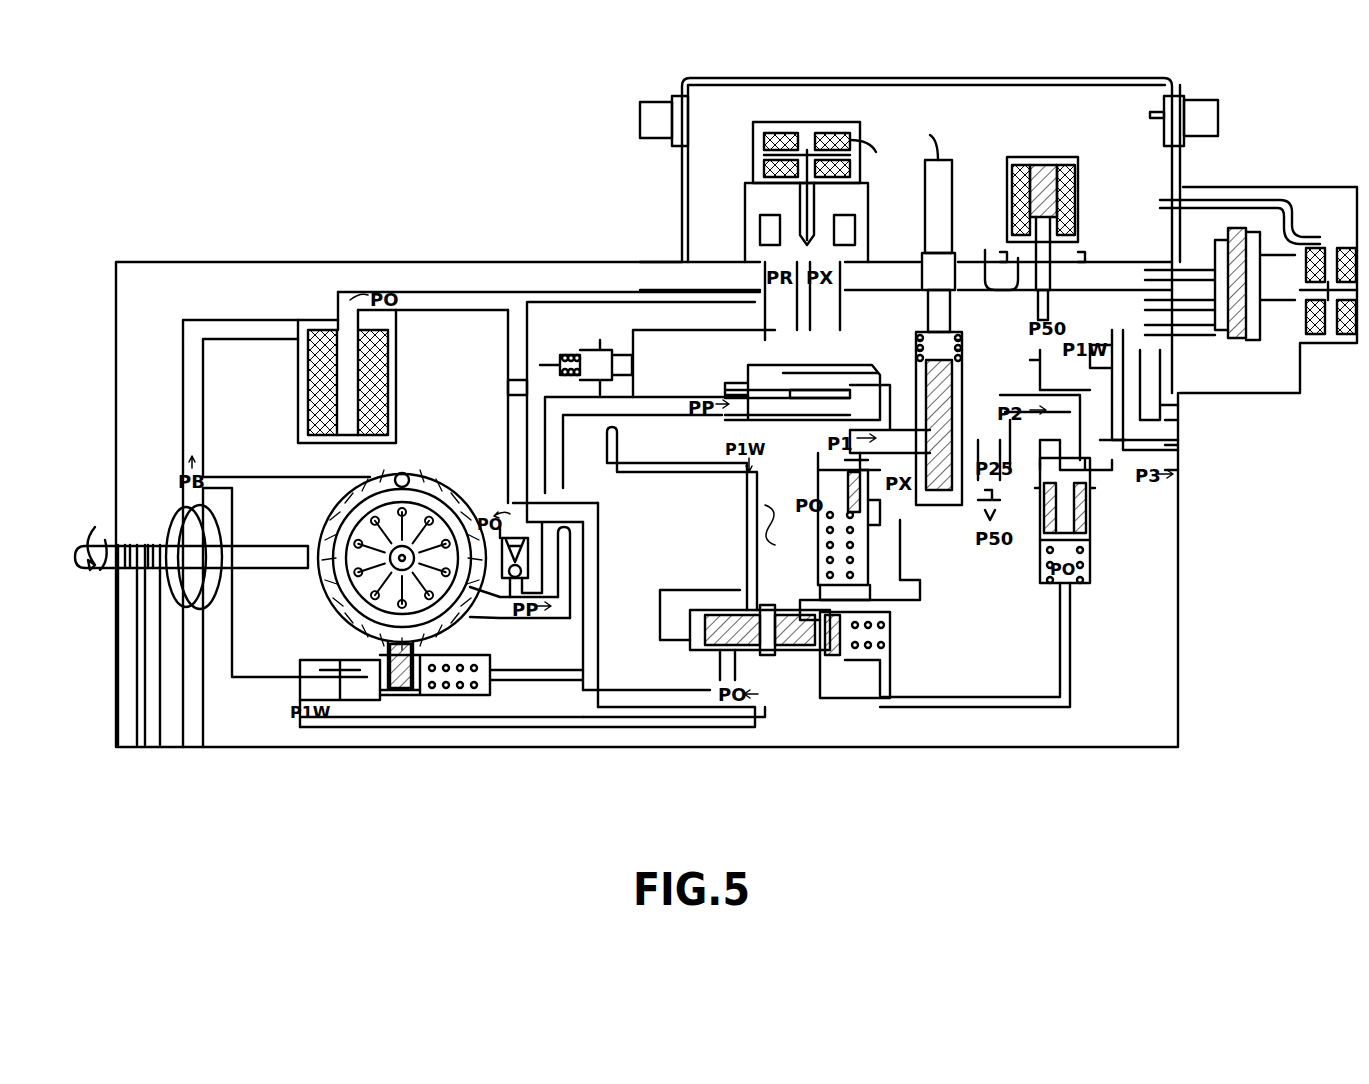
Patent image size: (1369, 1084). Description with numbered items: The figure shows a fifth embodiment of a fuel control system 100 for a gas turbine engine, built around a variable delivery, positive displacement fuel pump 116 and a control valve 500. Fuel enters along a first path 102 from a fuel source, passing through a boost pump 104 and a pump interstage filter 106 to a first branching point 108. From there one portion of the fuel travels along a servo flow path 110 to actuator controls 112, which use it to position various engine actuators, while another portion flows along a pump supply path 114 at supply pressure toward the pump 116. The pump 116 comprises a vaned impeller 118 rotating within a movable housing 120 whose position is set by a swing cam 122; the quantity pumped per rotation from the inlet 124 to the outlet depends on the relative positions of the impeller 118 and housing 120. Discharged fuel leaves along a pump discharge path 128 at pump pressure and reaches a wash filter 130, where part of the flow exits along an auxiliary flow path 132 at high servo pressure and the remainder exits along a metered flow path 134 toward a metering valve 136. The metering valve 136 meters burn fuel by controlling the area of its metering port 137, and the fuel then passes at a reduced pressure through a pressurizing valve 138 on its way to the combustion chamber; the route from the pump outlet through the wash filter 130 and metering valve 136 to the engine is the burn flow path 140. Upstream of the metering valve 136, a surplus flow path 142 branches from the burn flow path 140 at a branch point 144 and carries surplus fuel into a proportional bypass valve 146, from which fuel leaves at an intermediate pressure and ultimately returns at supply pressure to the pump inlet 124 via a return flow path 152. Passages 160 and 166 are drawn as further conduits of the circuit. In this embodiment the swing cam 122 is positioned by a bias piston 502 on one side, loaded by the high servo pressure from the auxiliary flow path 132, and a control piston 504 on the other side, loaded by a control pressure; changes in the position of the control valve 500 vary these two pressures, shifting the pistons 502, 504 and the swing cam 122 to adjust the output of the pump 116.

The fuel control system 100 is at (140, 205).
The first path 102 is at (190, 722).
The boost pump 104 is at (190, 590).
The pump interstage filter 106 is at (325, 330).
The first branching point 108 is at (520, 300).
The servo flow path 110 is at (612, 340).
The actuator controls 112 is at (1248, 180).
The pump supply path 114 is at (515, 345).
The variable delivery fuel pump 116 is at (366, 522).
The vaned impeller 118 is at (346, 540).
The movable housing 120 is at (322, 520).
The swing cam 122 is at (375, 648).
The inlet 124 is at (490, 505).
The pump discharge path 128 is at (562, 480).
The wash filter 130 is at (748, 372).
The auxiliary flow path 132 is at (820, 455).
The metered flow path 134 is at (815, 392).
The metering valve 136 is at (912, 342).
The metering port 137 is at (965, 380).
The pressurizing valve 138 is at (1090, 520).
The burn flow path 140 is at (887, 440).
The surplus flow path 142 is at (810, 508).
The branch point 144 is at (860, 470).
The proportional bypass valve 146 is at (878, 543).
The return flow path 152 is at (595, 710).
The valve 160 is at (635, 685).
The passage 166 is at (662, 735).
The control valve 500 is at (830, 660).
The bias piston 502 is at (330, 655).
The control piston 504 is at (450, 700).